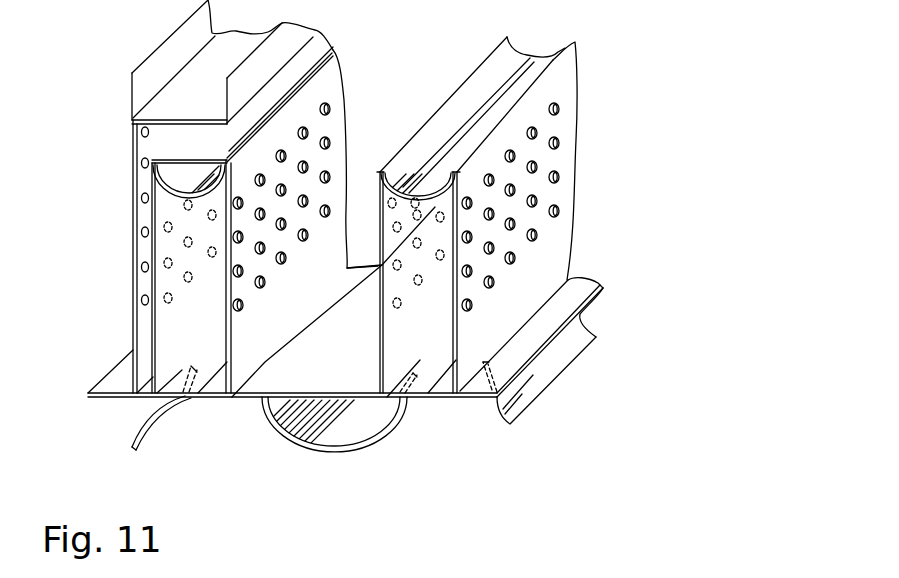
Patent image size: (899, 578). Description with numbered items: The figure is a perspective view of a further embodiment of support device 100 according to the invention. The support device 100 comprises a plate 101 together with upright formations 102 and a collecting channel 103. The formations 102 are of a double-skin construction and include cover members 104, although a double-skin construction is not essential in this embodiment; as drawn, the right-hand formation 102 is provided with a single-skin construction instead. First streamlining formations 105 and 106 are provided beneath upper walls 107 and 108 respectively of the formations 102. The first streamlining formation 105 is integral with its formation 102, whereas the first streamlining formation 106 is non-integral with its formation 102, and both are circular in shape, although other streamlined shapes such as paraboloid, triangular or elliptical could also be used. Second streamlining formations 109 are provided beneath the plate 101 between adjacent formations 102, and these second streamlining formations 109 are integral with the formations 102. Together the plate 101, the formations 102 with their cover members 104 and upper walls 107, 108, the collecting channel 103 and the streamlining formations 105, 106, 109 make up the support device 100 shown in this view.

The support device 100 is at (90, 340).
The plate 101 is at (108, 393).
The formations 102 is at (132, 231).
The collecting channel 103 is at (132, 88).
The cover members 104 is at (132, 168).
The first streamlining formation 105 is at (186, 205).
The first streamlining formation 106 is at (382, 267).
The upper wall 107 is at (198, 168).
The upper wall 108 is at (408, 187).
The second streamlining formations 109 is at (130, 445).